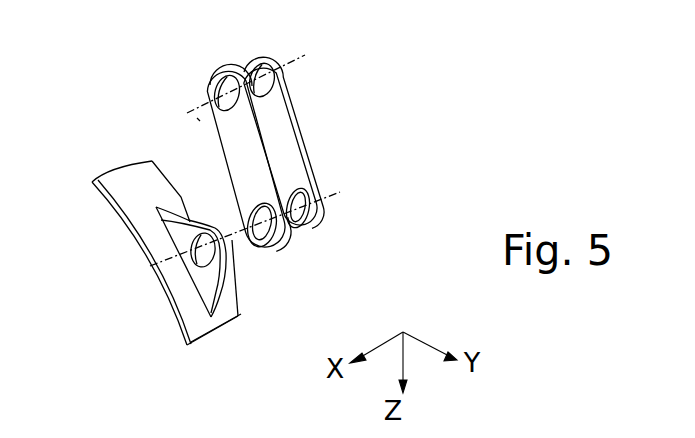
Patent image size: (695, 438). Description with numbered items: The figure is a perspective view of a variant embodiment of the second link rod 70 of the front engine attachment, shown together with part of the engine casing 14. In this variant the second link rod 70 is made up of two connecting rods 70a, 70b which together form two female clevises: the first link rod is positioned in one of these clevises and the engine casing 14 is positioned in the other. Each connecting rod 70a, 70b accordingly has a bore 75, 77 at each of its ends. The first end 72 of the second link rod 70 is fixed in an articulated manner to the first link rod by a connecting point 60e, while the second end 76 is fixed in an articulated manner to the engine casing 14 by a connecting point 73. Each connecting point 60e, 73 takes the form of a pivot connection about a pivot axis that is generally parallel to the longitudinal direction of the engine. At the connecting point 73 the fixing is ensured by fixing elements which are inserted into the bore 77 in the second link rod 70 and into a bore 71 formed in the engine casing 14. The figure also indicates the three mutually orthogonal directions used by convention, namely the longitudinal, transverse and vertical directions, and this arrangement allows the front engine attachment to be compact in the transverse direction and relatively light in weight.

The engine casing 14 is at (194, 348).
The bore 71 is at (188, 263).
The second link rod 70 is at (263, 179).
The connecting rod 70a is at (302, 150).
The connecting rod 70b is at (243, 146).
The first end 72 is at (256, 48).
The bore 75 is at (269, 83).
The connecting point 73 is at (249, 240).
The second end 76 is at (314, 216).
The bore 77 is at (308, 235).
The connecting point 60e is at (198, 118).